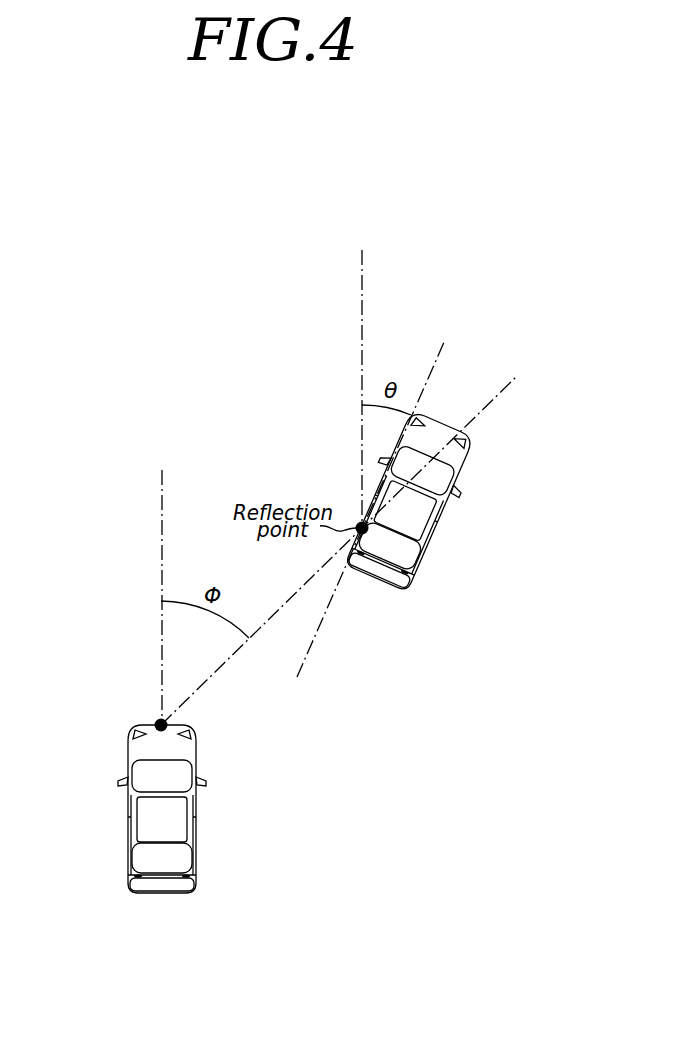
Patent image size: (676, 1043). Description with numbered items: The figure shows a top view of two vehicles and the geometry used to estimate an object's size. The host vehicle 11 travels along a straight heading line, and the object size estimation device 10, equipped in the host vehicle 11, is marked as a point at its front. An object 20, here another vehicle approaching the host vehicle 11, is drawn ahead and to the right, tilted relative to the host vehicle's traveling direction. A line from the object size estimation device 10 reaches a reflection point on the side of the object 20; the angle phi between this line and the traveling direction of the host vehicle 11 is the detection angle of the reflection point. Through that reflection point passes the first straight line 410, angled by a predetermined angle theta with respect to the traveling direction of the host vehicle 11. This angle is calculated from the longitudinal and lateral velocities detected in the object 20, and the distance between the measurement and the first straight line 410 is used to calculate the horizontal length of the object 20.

The object size estimation device 10 is at (172, 726).
The host vehicle 11 is at (129, 866).
The object 20 is at (459, 475).
The first straight line 410 is at (314, 642).